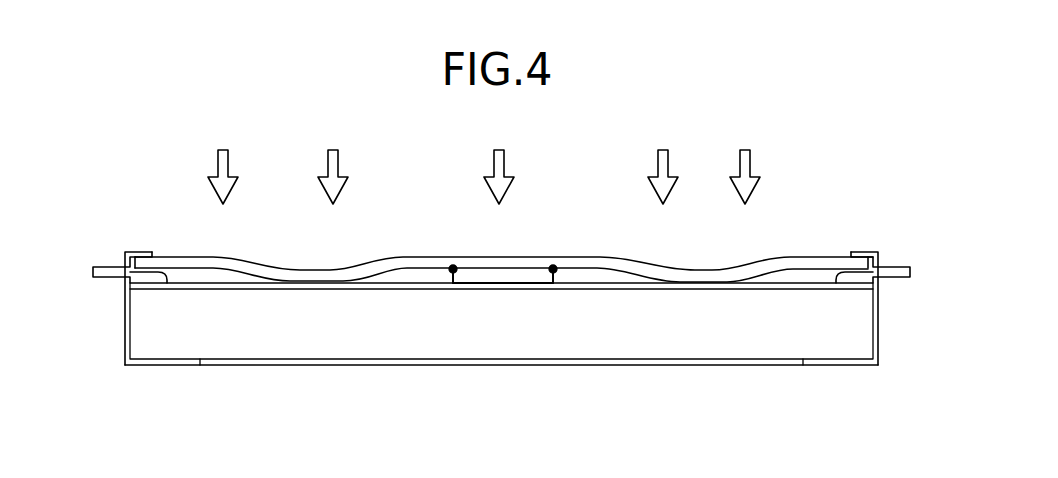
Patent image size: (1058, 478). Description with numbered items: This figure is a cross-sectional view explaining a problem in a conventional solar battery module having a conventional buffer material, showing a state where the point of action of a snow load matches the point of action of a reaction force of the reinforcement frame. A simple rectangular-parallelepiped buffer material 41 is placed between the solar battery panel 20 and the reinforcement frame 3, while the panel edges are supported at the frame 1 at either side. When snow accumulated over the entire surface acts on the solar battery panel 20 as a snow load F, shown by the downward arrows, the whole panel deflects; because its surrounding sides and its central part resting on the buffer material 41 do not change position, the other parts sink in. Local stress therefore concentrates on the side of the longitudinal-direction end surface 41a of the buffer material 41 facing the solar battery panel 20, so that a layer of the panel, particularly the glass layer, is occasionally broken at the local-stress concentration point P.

The frame 1 is at (125, 337).
The reinforcement frame 3 is at (697, 348).
The solar battery panel 20 is at (413, 257).
The buffer material 41 is at (513, 278).
The longitudinal-direction end surface 41a is at (446, 283).
The local-stress concentration point P is at (453, 265).
The snow load F is at (484, 165).